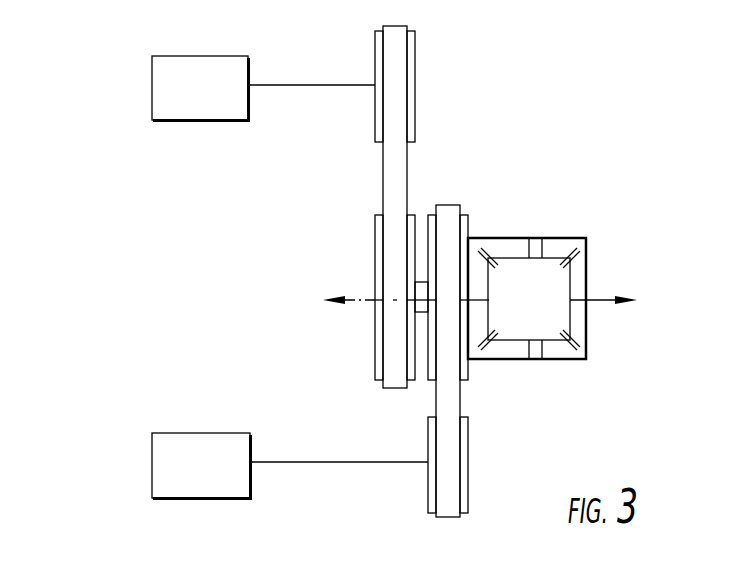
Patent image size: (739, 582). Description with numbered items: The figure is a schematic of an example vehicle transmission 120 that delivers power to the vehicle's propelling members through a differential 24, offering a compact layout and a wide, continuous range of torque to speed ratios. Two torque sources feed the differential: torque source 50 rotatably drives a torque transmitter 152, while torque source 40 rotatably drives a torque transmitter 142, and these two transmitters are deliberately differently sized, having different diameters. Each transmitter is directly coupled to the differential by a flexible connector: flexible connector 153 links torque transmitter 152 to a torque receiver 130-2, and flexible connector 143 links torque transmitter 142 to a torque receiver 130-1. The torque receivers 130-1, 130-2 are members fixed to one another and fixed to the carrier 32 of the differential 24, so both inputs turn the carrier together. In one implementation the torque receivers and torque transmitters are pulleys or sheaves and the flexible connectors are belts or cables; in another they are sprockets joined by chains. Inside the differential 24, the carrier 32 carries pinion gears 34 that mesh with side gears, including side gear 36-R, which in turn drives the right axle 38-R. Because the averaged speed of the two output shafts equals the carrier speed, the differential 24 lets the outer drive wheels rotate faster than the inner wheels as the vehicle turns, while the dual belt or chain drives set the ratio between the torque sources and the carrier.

The vehicle transmission 120 is at (80, 149).
The torque source 50 is at (152, 90).
The torque source 40 is at (152, 465).
The torque receiver 130-2 is at (375, 53).
The torque transmitter 152 is at (415, 80).
The flexible connector 153 is at (407, 177).
The torque receiver 130-1 is at (468, 220).
The flexible connector 143 is at (460, 400).
The torque transmitter 142 is at (468, 468).
The differential 24 is at (569, 249).
The carrier 32 is at (562, 238).
The pinion gears 34 is at (540, 256).
The side gear 36-R is at (570, 283).
The axle 38-R is at (603, 301).